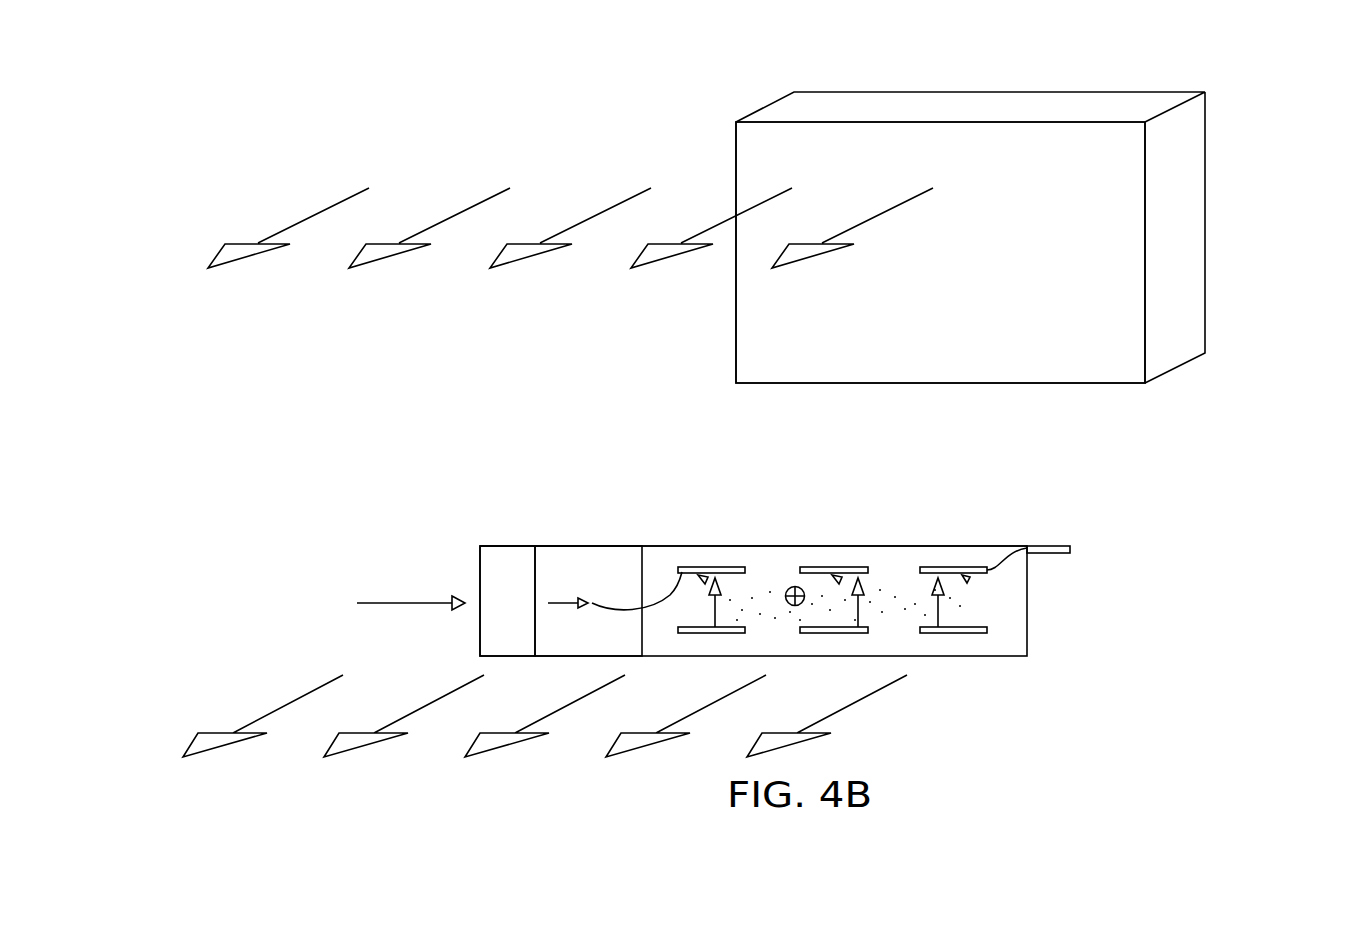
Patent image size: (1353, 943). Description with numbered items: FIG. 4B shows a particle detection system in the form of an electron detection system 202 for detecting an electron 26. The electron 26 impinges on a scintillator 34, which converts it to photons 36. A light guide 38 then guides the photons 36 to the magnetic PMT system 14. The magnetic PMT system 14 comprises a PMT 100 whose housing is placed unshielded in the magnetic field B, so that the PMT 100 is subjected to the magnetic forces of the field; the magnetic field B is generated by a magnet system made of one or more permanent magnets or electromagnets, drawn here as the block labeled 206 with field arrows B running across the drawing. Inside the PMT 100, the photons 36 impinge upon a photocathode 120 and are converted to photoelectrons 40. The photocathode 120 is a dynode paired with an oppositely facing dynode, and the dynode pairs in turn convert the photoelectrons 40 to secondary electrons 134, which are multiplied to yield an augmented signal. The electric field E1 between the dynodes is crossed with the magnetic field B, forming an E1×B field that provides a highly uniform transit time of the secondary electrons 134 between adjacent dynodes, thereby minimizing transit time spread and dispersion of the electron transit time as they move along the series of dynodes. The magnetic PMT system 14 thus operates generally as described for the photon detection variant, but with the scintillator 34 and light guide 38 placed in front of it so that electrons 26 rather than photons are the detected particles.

The electron detection system 202 is at (1281, 126).
The magnet face 206 is at (1022, 345).
The magnetic field B is at (307, 217).
The magnetic PMT system 14 is at (1093, 626).
The electron 26 is at (450, 598).
The scintillator 34 is at (508, 560).
The photons 36 is at (592, 603).
The light guide 38 is at (580, 562).
The PMT 100 is at (743, 545).
The photocathode 120 is at (680, 568).
The secondary electrons 134 is at (900, 615).
The first electric field E1 is at (722, 585).
The photoelectrons 40 is at (767, 613).